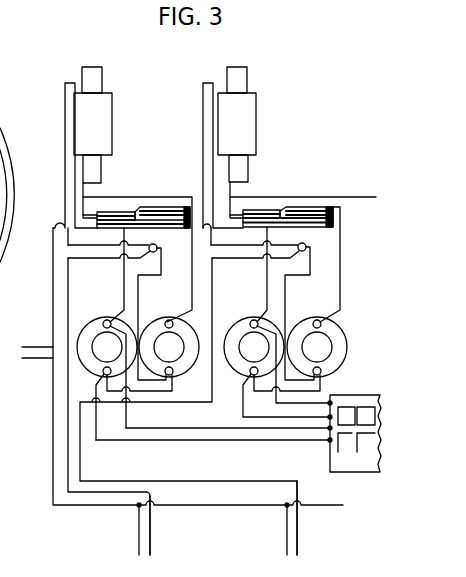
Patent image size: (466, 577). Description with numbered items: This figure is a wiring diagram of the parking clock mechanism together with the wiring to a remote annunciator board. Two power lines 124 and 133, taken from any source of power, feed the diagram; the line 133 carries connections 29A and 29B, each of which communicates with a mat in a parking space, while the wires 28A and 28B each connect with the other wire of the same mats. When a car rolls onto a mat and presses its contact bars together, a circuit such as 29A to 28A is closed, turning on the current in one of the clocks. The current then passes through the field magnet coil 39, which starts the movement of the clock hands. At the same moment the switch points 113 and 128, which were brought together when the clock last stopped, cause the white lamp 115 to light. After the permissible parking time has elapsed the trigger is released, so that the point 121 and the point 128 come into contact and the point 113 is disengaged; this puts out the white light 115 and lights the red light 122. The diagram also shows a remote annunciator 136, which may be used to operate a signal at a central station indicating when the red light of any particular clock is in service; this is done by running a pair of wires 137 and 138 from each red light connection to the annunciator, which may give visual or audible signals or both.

The field magnet coil 39 is at (112, 128).
The point 121 is at (203, 222).
The switch point 113 is at (188, 213).
The switch point 128 is at (183, 227).
The red light 122 is at (103, 321).
The white lamp 115 is at (167, 320).
The power line 124 is at (42, 346).
The power line 133 is at (43, 360).
The remote annunciator 136 is at (335, 397).
The wire 137 is at (197, 428).
The wire 138 is at (257, 441).
The wire 28A is at (153, 527).
The connection 29A is at (139, 550).
The connection 29B is at (287, 547).
The wire 28B is at (300, 527).